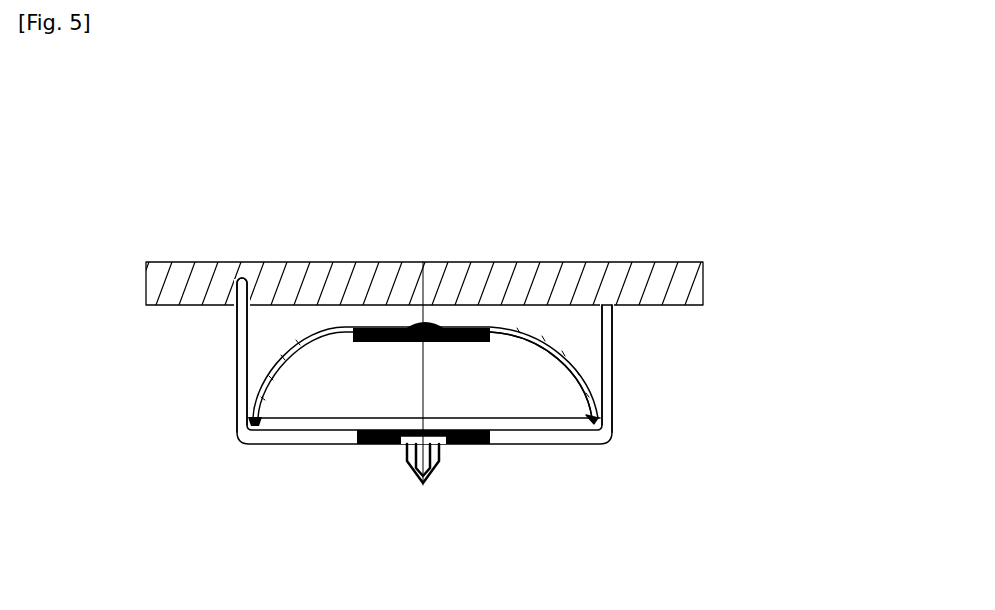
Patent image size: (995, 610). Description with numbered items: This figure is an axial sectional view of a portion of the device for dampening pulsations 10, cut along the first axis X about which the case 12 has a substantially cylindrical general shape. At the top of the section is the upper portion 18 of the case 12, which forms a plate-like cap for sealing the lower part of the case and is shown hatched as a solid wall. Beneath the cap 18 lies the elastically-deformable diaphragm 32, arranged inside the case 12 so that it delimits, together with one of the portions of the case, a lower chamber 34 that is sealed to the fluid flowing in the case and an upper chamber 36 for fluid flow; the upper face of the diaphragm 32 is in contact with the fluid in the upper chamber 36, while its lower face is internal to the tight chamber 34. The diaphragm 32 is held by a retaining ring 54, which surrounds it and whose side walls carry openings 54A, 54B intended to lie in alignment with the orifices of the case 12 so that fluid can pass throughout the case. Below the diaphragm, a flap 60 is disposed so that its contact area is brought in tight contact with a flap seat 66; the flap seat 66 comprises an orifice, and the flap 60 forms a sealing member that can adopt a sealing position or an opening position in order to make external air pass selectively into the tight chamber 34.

The device for dampening pulsations 10 is at (249, 228).
The case 12 is at (569, 260).
The upper portion 18 is at (614, 302).
The elastically-deformable diaphragm 32 is at (350, 330).
The lower chamber 34 is at (542, 380).
The upper chamber 36 is at (505, 320).
The retaining ring 54 is at (618, 330).
The opening of the retaining ring 54A is at (237, 380).
The opening of the retaining ring 54B is at (613, 378).
The flap 60 is at (404, 457).
The flap seat 66 is at (466, 446).
The first axis X is at (423, 382).